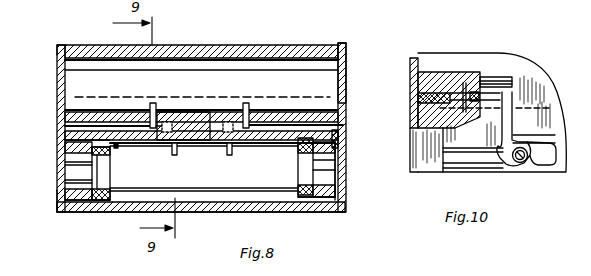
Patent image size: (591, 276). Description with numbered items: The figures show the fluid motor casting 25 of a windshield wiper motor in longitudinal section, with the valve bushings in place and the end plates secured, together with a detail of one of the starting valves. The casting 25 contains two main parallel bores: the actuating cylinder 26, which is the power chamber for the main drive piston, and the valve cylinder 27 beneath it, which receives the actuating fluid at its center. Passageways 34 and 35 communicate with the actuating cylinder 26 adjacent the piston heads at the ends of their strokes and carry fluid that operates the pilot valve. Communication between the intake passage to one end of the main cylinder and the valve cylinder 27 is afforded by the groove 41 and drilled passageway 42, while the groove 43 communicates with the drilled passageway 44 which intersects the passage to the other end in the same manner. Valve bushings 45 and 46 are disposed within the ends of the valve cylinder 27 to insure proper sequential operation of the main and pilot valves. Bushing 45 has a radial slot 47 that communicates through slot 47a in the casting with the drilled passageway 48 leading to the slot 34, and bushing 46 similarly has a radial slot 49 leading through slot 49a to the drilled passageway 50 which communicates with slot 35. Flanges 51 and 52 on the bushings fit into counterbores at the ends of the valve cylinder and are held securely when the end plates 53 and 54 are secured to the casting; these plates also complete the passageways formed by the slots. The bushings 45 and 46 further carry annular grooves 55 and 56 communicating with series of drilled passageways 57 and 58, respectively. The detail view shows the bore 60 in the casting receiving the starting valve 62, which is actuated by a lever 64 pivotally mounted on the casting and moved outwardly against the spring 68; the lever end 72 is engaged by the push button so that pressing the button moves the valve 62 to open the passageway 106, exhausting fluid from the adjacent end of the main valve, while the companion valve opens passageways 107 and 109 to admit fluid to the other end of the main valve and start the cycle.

In FIG. 8, the casting 25 is at (291, 42).
In FIG. 8, the actuating cylinder 26 is at (212, 58).
In FIG. 8, the valve cylinder 27 is at (125, 196).
In FIG. 8, the passageway 34 is at (152, 104).
In FIG. 8, the passageway 35 is at (250, 108).
In FIG. 8, the groove 41 is at (212, 147).
In FIG. 8, the drilled passageway 42 is at (167, 120).
In FIG. 8, the groove 43 is at (233, 150).
In FIG. 8, the drilled passageway 44 is at (230, 120).
In FIG. 8, the valve bushing 45 is at (82, 200).
In FIG. 8, the valve bushing 46 is at (334, 170).
In FIG. 8, the radial slot 47 is at (65, 149).
In FIG. 8, the slot 47a is at (65, 137).
In FIG. 8, the drilled passageway 48 is at (66, 127).
In FIG. 8, the radial slot 49 is at (338, 144).
In FIG. 8, the slot 49a is at (338, 134).
In FIG. 8, the drilled passageway 50 is at (338, 125).
In FIG. 8, the flange 51 is at (56, 188).
In FIG. 8, the flange 52 is at (343, 202).
In FIG. 8, the end plate 53 is at (57, 50).
In FIG. 8, the end plate 54 is at (346, 63).
In FIG. 10, the end plate 54 is at (412, 82).
In FIG. 8, the annular groove 55 is at (100, 181).
In FIG. 8, the annular groove 56 is at (305, 170).
In FIG. 8, the drilled passageways 57 is at (103, 200).
In FIG. 8, the drilled passageways 58 is at (298, 200).
In FIG. 10, the bore 60 is at (430, 74).
In FIG. 10, the starting valve 62 is at (458, 120).
In FIG. 10, the lever 64 is at (510, 158).
In FIG. 10, the spring 68 is at (437, 92).
In FIG. 10, the lever end 72 is at (552, 164).
In FIG. 8, the passageway 106 is at (312, 146).
In FIG. 10, the passageway 106 is at (483, 77).
In FIG. 8, the passageway 107 is at (178, 152).
In FIG. 8, the passageway 109 is at (117, 148).